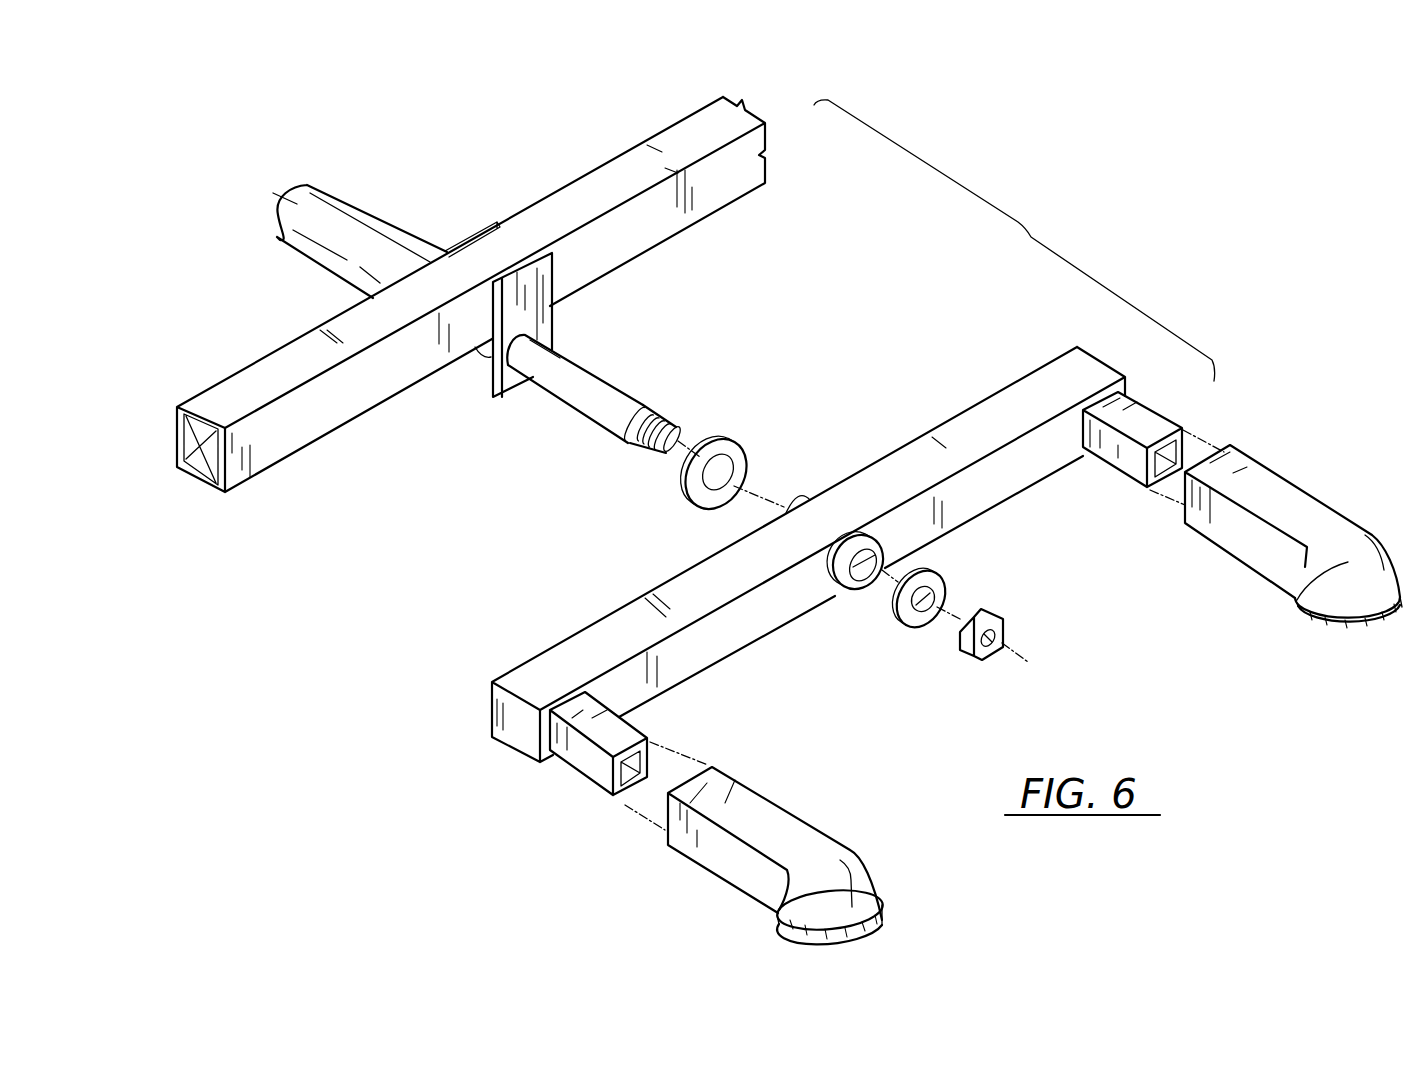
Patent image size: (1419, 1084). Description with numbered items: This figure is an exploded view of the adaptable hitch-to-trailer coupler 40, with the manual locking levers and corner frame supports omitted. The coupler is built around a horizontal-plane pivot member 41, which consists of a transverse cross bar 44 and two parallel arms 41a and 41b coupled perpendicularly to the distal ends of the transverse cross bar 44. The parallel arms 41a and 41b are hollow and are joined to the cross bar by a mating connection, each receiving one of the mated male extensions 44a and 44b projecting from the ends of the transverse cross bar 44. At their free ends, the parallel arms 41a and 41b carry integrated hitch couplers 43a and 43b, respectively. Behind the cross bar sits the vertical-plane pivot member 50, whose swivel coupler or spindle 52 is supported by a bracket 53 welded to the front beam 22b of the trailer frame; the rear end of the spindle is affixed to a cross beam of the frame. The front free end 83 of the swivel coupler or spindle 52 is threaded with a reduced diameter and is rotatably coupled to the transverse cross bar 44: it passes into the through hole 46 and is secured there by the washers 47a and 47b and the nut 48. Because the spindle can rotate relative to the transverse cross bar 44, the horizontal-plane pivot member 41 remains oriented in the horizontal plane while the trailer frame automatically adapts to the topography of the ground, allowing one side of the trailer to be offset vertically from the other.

The front beam 22b is at (308, 422).
The adaptable hitch-to-trailer coupler 40 is at (929, 522).
The horizontal-plane pivot member 41 is at (1035, 674).
The parallel arm 41a is at (763, 827).
The parallel arm 41b is at (1233, 552).
The hitch coupler 43a is at (857, 868).
The hitch coupler 43b is at (1348, 563).
The transverse cross bar 44 is at (893, 477).
The male extension 44a is at (590, 760).
The male extension 44b is at (1155, 427).
The through hole 46 is at (862, 590).
The washer 47a is at (937, 577).
The washer 47b is at (724, 476).
The nut 48 is at (993, 610).
The vertical-plane pivot member 50 is at (589, 369).
The swivel coupler or spindle 52 is at (623, 410).
The bracket 53 is at (490, 364).
The front free end 83 is at (661, 421).